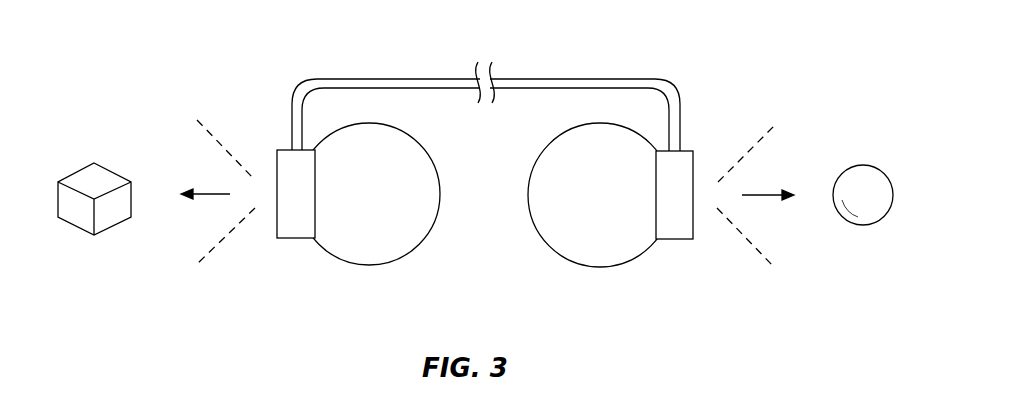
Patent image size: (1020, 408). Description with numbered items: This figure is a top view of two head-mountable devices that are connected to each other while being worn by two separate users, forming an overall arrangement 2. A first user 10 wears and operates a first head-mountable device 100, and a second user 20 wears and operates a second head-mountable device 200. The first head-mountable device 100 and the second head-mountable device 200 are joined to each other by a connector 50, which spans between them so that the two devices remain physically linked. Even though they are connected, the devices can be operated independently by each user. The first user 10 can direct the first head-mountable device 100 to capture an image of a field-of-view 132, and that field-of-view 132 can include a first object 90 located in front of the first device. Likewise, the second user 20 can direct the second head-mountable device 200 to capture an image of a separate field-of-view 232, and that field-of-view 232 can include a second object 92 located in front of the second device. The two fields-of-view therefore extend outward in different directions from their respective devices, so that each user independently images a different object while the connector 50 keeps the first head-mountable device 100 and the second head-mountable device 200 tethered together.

The head-mounted device system 2 is at (130, 103).
The first user 10 is at (410, 133).
The second user 20 is at (532, 235).
The connector 50 is at (407, 77).
The first object 90 is at (62, 180).
The second object 92 is at (840, 172).
The first head-mountable device 100 is at (305, 240).
The second head-mountable device 200 is at (677, 240).
The field-of-view 132 is at (228, 235).
The field-of-view 232 is at (745, 238).